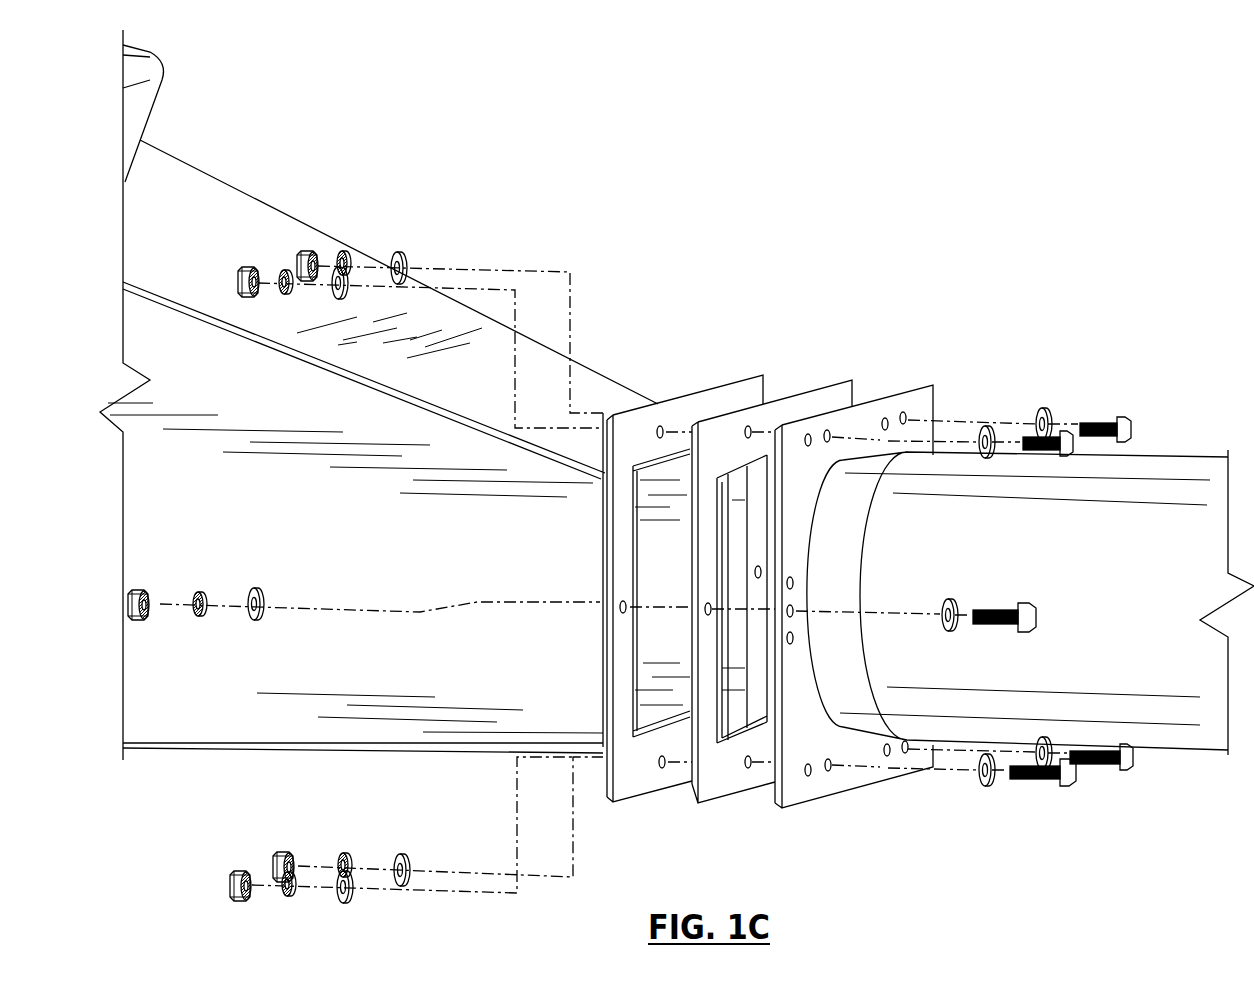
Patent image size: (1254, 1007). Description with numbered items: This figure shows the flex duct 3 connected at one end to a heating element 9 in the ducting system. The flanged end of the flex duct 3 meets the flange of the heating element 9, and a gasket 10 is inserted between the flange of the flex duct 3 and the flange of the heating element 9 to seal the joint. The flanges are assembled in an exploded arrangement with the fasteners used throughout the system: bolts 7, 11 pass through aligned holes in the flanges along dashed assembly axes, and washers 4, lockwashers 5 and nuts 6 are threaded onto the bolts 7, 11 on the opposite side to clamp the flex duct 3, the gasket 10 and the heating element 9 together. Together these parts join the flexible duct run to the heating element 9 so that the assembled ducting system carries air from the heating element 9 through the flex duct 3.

The flex duct 3 is at (915, 380).
The washer 4 is at (1033, 420).
The lockwasher 5 is at (195, 612).
The nut 6 is at (135, 612).
The bolt 7 is at (1095, 418).
The heating element 9 is at (290, 222).
The gasket 10 is at (830, 380).
The bolt 11 is at (1128, 768).